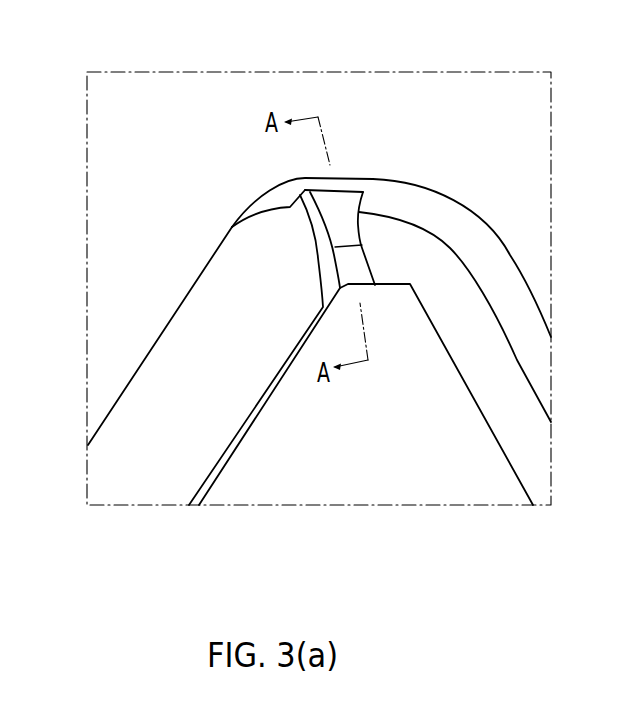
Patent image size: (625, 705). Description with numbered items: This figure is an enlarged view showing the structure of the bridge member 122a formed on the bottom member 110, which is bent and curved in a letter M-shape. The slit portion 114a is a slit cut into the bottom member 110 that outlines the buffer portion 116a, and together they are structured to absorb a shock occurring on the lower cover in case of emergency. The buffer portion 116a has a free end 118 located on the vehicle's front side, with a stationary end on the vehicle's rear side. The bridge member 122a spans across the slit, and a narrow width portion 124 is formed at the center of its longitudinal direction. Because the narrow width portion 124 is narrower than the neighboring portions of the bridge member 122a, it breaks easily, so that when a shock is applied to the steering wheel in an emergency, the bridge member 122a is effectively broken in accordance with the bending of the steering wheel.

The bottom member 110 is at (164, 103).
The slit portion 114a is at (193, 275).
The buffer portion 116a is at (415, 482).
The free end 118 is at (242, 430).
The bridge member 122a is at (304, 179).
The narrow width portion 124 is at (337, 247).